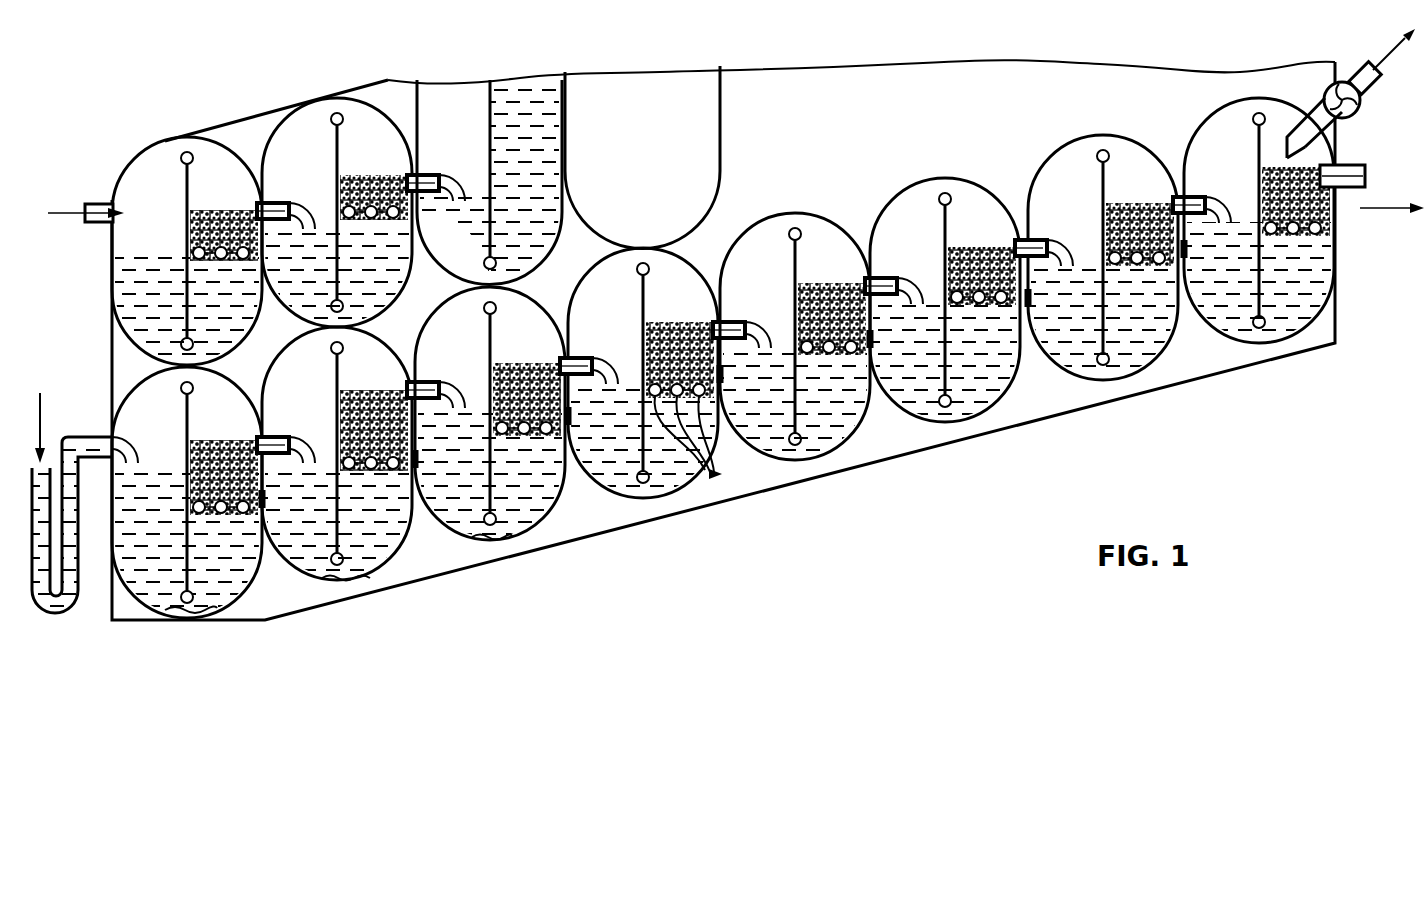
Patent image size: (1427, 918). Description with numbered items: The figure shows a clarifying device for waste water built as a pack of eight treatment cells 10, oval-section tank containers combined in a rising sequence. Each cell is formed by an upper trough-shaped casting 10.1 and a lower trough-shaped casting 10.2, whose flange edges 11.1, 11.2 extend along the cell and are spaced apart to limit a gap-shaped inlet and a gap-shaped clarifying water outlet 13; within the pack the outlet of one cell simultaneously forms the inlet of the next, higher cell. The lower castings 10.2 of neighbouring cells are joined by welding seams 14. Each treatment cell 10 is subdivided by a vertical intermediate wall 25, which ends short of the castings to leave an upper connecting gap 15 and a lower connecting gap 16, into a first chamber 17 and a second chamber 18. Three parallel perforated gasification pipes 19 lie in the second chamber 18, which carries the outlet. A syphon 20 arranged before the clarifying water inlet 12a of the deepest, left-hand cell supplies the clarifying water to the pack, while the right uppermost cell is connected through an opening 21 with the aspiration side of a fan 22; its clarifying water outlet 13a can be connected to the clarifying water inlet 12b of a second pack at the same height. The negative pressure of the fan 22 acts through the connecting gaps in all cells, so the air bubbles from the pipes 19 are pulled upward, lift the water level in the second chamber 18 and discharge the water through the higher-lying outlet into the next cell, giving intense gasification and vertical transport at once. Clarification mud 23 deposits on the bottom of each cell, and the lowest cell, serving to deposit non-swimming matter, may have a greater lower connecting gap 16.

The treatment cell 10 is at (787, 195).
The upper trough-shaped casting 10.1 is at (949, 177).
The lower trough-shaped casting 10.2 is at (988, 412).
The flange edge 11.1 is at (730, 320).
The flange edge 11.2 is at (883, 279).
The clarifying water inlet 12a is at (92, 435).
The clarifying water inlet 12b is at (93, 203).
The clarifying water outlet 13 is at (274, 436).
The clarifying water outlet 13a is at (1355, 190).
The welding seam 14 is at (417, 462).
The upper connecting gap 15 is at (193, 383).
The lower connecting gap 16 is at (512, 540).
The first chamber 17 is at (305, 360).
The second chamber 18 is at (367, 360).
The perforated gasification pipe 19 is at (704, 441).
The syphon 20 is at (56, 612).
The opening 21 is at (1340, 128).
The fan 22 is at (1332, 75).
The clarification mud 23 is at (348, 579).
The vertical intermediate wall 25 is at (186, 438).